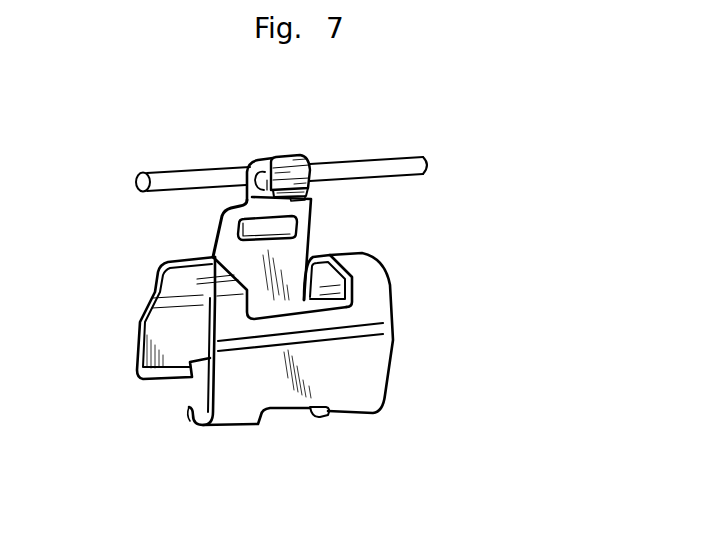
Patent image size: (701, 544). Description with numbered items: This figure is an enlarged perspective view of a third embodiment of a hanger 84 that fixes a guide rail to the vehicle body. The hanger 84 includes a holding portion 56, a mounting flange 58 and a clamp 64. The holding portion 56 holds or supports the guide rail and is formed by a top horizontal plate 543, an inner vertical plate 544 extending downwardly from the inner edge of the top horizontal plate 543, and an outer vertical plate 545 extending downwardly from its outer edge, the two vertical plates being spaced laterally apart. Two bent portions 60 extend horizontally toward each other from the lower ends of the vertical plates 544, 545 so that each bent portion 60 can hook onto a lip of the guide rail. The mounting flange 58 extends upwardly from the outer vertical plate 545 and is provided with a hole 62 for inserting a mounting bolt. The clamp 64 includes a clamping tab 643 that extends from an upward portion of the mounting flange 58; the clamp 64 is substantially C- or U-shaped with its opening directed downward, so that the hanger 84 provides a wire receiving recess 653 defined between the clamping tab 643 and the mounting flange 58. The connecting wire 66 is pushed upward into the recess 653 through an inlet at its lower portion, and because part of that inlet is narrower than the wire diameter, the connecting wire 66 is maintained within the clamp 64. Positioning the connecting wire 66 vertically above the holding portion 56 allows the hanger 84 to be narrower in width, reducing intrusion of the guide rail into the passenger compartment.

The holding portion 56 is at (380, 362).
The mounting flange 58 is at (307, 209).
The bent portion 60 is at (150, 378).
The hole 62 is at (252, 231).
The clamp 64 is at (290, 167).
The connecting wire 66 is at (355, 155).
The hanger 84 is at (393, 251).
The top horizontal plate 543 is at (368, 270).
The inner vertical plate 544 is at (373, 382).
The outer vertical plate 545 is at (157, 323).
The clamping tab 643 is at (293, 180).
The wire receiving recess 653 is at (253, 170).